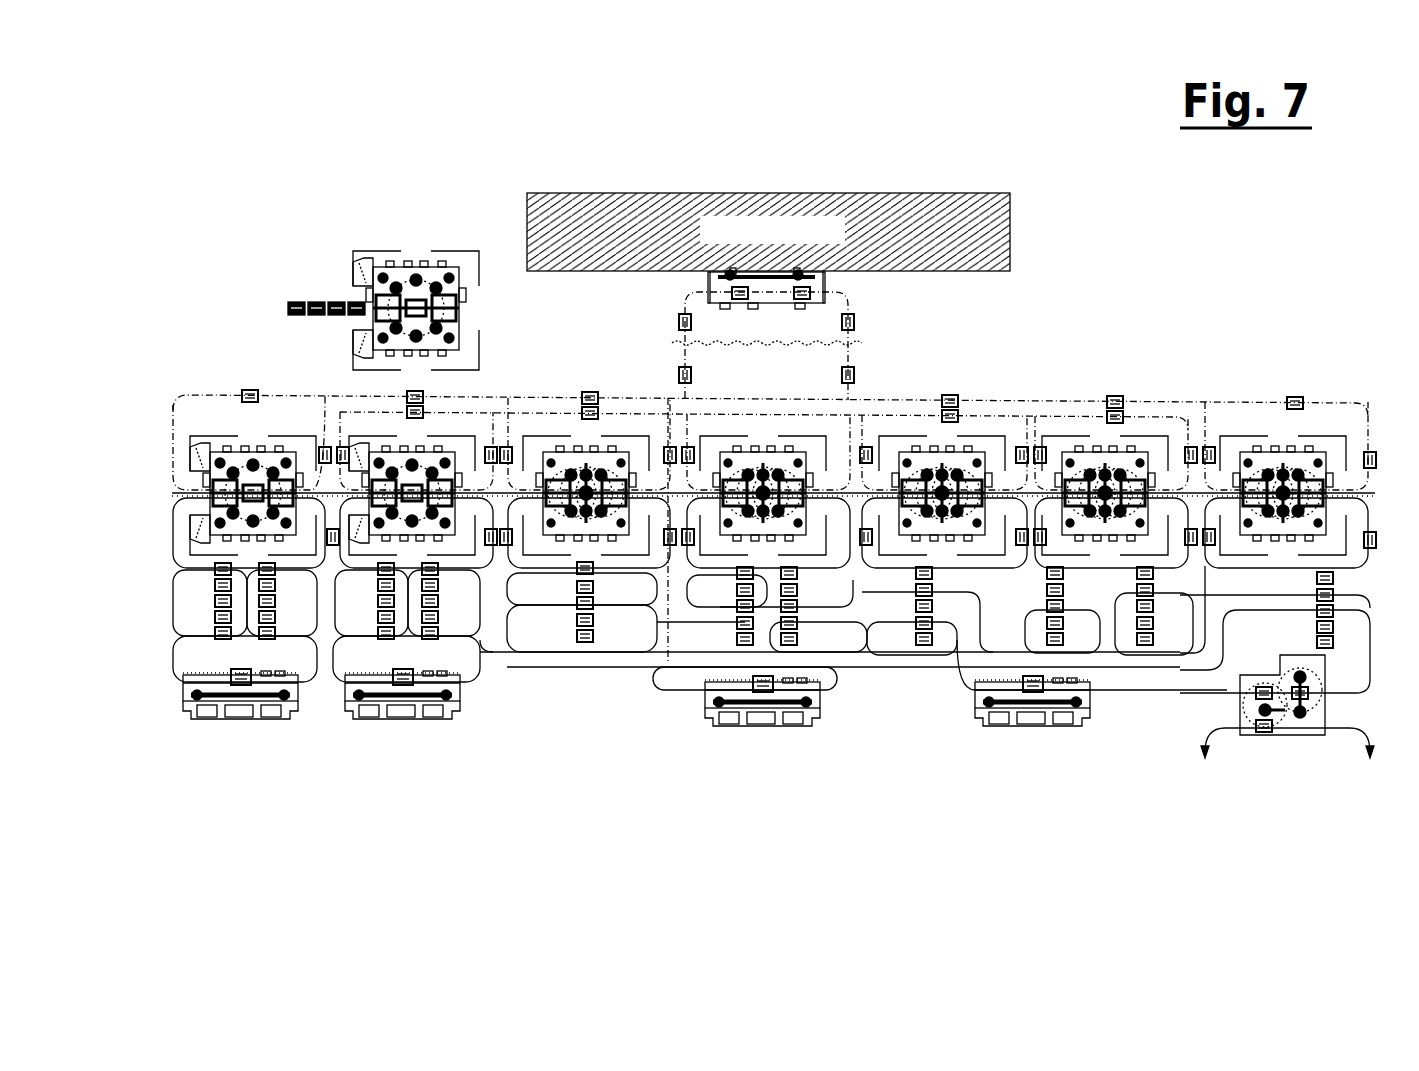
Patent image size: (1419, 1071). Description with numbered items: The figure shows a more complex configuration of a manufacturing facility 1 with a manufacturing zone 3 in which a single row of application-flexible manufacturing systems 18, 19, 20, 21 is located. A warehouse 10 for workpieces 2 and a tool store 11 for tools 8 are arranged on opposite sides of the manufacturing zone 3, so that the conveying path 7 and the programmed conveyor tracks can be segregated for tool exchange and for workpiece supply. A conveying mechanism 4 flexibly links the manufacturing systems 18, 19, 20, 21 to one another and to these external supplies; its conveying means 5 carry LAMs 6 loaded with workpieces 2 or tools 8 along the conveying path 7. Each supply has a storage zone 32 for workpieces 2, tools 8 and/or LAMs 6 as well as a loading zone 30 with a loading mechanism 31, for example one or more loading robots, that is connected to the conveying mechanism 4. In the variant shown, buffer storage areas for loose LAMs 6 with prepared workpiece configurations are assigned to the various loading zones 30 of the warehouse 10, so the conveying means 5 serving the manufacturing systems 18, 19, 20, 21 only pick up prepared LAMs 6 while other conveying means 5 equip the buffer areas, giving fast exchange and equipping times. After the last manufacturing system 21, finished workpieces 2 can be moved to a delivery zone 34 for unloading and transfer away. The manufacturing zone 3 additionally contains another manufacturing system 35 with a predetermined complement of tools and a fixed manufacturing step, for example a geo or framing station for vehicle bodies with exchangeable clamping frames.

The manufacturing facility 1 is at (278, 188).
The workpiece 2 is at (220, 606).
The manufacturing zone 3 is at (1232, 434).
The conveying mechanism 4 is at (1052, 378).
The conveying means 5 is at (323, 443).
The LAM 6 is at (272, 640).
The conveying path 7 is at (642, 392).
The tool 8 is at (693, 378).
The warehouse 10 is at (461, 735).
The tool store 11 is at (768, 195).
The manufacturing system 18 is at (224, 458).
The manufacturing system 19 is at (558, 450).
The manufacturing system 20 is at (913, 450).
The manufacturing system 21 is at (1136, 462).
The loading zone 30 is at (824, 285).
The loading mechanism 31 is at (276, 720).
The storage zone 32 is at (893, 214).
The delivery zone 34 is at (1296, 735).
The manufacturing system 35 is at (414, 264).